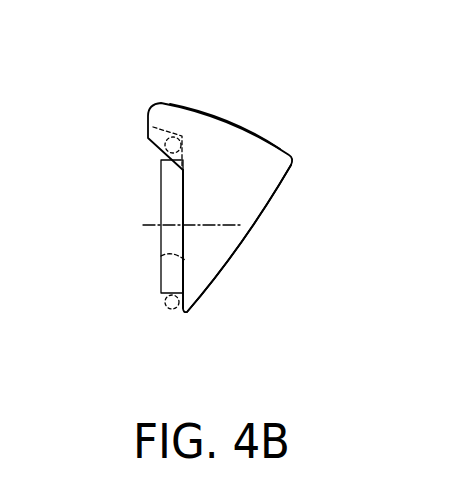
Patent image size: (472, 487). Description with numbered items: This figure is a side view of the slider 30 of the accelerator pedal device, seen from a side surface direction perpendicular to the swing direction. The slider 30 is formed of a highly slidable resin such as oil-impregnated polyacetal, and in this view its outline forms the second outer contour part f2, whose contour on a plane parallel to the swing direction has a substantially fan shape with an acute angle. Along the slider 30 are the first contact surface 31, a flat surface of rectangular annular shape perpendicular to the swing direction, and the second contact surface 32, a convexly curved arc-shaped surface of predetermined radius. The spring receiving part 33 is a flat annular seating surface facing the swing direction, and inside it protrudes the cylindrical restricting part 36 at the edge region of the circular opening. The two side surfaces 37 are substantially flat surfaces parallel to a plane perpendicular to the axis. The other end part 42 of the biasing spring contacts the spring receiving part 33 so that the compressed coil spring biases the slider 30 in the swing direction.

The slider 30 is at (154, 97).
The first contact surface 31 is at (262, 216).
The second contact surface 32 is at (227, 123).
The spring receiving part 33 is at (161, 263).
The cylindrical restricting part 36 is at (161, 256).
The side surfaces 37 is at (232, 237).
The other end part 42 is at (169, 308).
The second outer contour part f2 is at (293, 157).